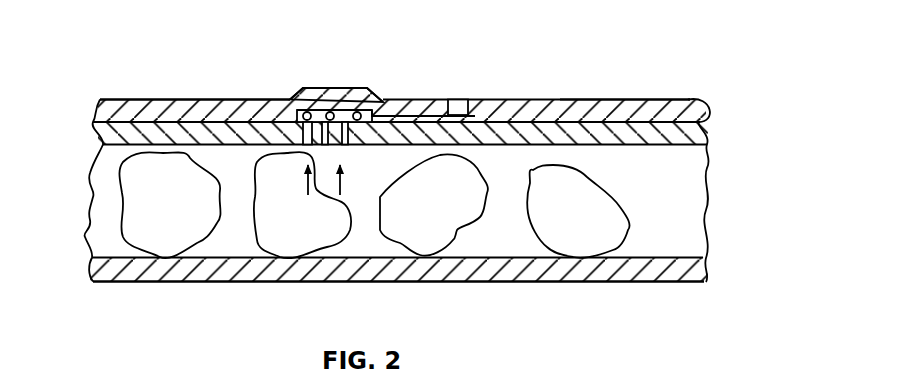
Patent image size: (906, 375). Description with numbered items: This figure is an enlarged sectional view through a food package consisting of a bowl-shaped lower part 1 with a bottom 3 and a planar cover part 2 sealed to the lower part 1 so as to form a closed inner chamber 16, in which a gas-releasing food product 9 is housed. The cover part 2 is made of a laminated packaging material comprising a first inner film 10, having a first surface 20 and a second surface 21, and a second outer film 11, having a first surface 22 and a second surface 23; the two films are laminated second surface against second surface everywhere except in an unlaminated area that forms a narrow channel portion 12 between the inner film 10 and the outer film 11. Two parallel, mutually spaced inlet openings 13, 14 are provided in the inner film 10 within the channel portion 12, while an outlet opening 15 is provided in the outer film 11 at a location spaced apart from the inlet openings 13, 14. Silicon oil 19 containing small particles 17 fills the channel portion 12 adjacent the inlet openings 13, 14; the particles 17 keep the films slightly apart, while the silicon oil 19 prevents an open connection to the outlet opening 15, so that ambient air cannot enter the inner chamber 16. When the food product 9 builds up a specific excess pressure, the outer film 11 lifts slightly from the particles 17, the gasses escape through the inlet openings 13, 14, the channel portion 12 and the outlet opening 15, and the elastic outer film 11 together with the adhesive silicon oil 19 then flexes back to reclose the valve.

The lower part 1 is at (633, 290).
The cover part 2 is at (128, 93).
The bottom 3 is at (482, 265).
The food product 9 is at (568, 242).
The first inner film 10 is at (688, 133).
The second outer film 11 is at (627, 108).
The channel portion 12 is at (377, 105).
The inlet opening 13 is at (343, 143).
The inlet opening 14 is at (290, 121).
The outlet opening 15 is at (458, 102).
The inner chamber 16 is at (680, 202).
The particles 17 is at (328, 111).
The silicon oil 19 is at (348, 111).
The first surface 20 is at (705, 155).
The second surface 21 is at (709, 95).
The first surface 22 is at (678, 97).
The second surface 23 is at (543, 123).